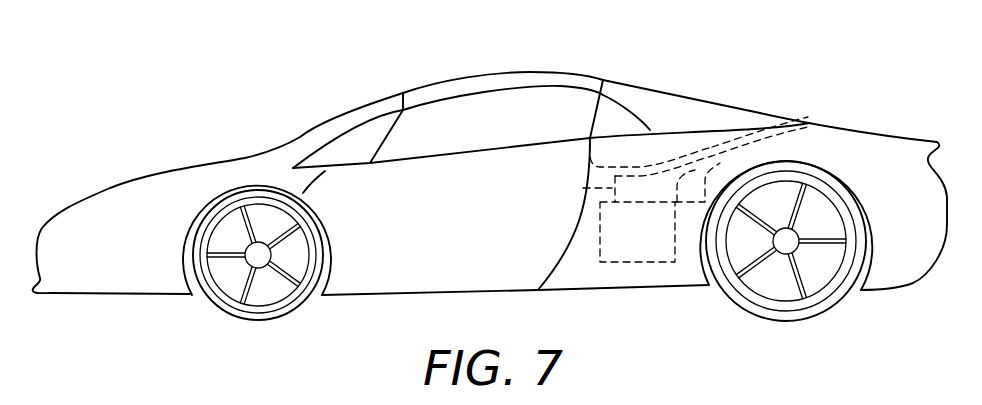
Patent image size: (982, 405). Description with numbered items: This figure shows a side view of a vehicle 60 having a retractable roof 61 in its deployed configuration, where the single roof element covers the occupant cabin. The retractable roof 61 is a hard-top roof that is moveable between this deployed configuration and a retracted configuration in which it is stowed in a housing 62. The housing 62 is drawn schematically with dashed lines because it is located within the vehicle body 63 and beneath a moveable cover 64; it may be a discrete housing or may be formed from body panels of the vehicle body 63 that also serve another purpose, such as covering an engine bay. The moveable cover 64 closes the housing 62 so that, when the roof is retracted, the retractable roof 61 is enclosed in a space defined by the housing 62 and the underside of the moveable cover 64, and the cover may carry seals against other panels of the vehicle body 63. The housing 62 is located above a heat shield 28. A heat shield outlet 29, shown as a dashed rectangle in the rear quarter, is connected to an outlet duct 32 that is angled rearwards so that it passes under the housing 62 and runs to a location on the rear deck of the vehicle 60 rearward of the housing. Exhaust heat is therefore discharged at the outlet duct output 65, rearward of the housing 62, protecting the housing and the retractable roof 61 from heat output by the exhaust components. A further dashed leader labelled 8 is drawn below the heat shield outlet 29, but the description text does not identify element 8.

The vehicle 60 is at (297, 100).
The roof 61 is at (514, 75).
The air duct 62 is at (705, 146).
The rear end 63 is at (898, 145).
The rear quarter panel 64 is at (662, 102).
The shoulder line 65 is at (807, 123).
The duct opening 32 is at (752, 121).
The air inlet 28 is at (577, 193).
The heat exchanger unit 29 is at (675, 206).
The thermal management system 8 is at (620, 253).